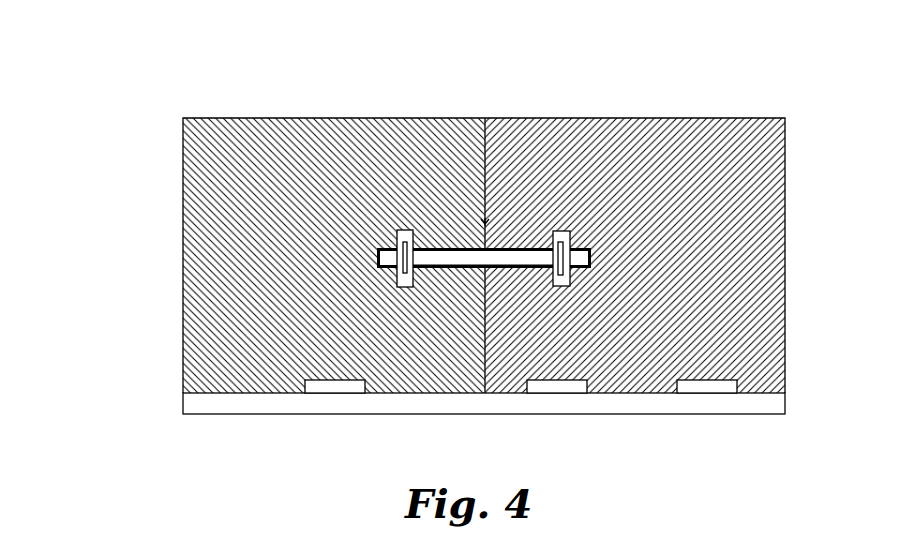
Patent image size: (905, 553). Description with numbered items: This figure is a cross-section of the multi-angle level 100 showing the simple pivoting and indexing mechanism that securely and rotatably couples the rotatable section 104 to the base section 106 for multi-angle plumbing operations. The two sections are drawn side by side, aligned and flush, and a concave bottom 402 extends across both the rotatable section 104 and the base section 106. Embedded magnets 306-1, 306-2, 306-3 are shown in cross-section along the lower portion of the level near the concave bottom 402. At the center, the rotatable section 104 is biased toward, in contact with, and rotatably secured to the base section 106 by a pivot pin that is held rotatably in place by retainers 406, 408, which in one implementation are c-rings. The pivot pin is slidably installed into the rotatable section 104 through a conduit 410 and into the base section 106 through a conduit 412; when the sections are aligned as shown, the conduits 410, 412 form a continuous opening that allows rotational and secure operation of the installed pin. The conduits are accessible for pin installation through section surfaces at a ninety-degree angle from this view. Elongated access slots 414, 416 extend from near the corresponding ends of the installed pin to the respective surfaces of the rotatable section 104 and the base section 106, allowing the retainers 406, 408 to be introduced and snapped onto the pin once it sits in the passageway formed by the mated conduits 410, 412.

The multi-angle level 100 is at (148, 43).
The rotatable section 104 is at (268, 118).
The base section 106 is at (710, 118).
The concave bottom 402 is at (197, 402).
The embedded magnet 306-1 is at (335, 388).
The embedded magnet 306-2 is at (562, 386).
The embedded magnet 306-3 is at (717, 386).
The retainer 406 is at (402, 272).
The retainer 408 is at (565, 235).
The conduit 410 is at (465, 270).
The conduit 412 is at (508, 270).
The elongated access slot 414 is at (400, 232).
The elongated access slot 416 is at (560, 235).